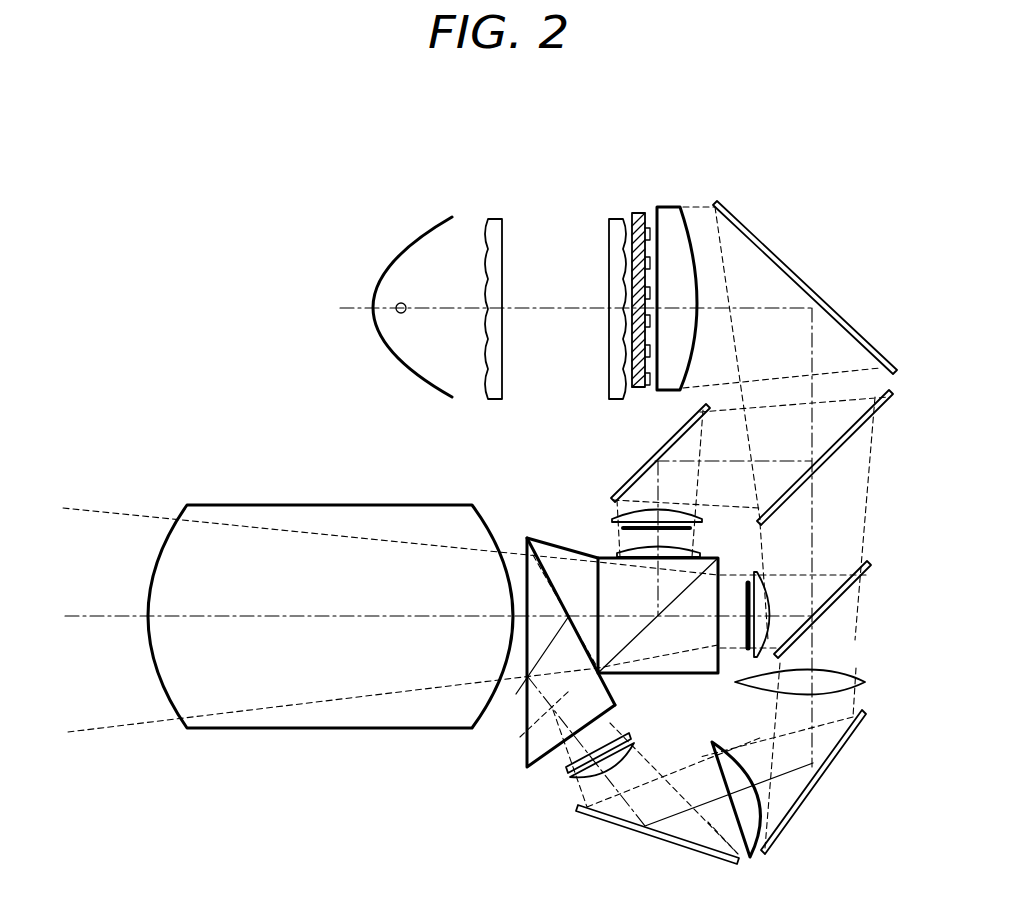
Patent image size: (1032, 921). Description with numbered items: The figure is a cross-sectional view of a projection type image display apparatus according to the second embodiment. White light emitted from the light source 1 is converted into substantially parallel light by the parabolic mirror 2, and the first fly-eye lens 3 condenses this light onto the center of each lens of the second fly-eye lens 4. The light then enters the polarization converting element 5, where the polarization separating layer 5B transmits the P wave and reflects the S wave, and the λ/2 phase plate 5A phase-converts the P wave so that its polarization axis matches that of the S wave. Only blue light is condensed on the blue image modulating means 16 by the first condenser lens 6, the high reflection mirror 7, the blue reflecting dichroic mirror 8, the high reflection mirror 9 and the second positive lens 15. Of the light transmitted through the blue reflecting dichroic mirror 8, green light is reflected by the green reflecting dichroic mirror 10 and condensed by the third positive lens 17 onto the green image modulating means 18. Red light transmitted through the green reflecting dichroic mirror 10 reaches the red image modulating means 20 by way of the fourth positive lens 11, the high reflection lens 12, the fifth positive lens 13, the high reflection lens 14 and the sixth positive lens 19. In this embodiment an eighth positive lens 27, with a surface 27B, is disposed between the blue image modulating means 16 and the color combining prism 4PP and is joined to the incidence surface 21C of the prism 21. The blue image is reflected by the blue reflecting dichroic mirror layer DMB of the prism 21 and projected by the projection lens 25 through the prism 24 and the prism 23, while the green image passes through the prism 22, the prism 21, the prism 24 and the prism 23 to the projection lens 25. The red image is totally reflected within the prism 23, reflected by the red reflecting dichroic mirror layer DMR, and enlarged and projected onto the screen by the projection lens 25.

The light source 1 is at (398, 304).
The parabolic mirror 2 is at (424, 240).
The first fly-eye lens 3 is at (490, 217).
The second fly-eye lens 4 is at (608, 232).
The polarization converting element 5 is at (638, 214).
The λ/2 phase plate 5A is at (648, 230).
The polarization separating layer 5B is at (632, 232).
The first condenser lens 6 is at (672, 207).
The high reflection mirror 7 is at (750, 228).
The blue reflecting dichroic mirror 8 is at (887, 395).
The high reflection mirror 9 is at (668, 433).
The green reflecting dichroic mirror 10 is at (871, 568).
The fourth positive lens 11 is at (867, 683).
The high reflection lens 12 is at (860, 735).
The fifth positive lens 13 is at (751, 858).
The high reflection lens 14 is at (621, 826).
The second positive lens 15 is at (614, 514).
The blue image modulating means 16 is at (622, 529).
The third positive lens 17 is at (757, 572).
The green image modulating means 18 is at (747, 650).
The sixth positive lens 19 is at (568, 792).
The red image modulating means 20 is at (568, 770).
The prism 21 is at (707, 553).
The incidence surface 21C is at (745, 553).
The prism 22 is at (630, 676).
The prism 23 is at (527, 750).
The prism 24 is at (542, 540).
The projection lens 25 is at (325, 505).
The eighth positive lens 27 is at (617, 557).
The lens surface 27B is at (622, 549).
The color combining prism 4PP is at (527, 540).
The red reflecting dichroic mirror layer DMR is at (577, 645).
The blue reflecting dichroic mirror layer DMB is at (756, 567).